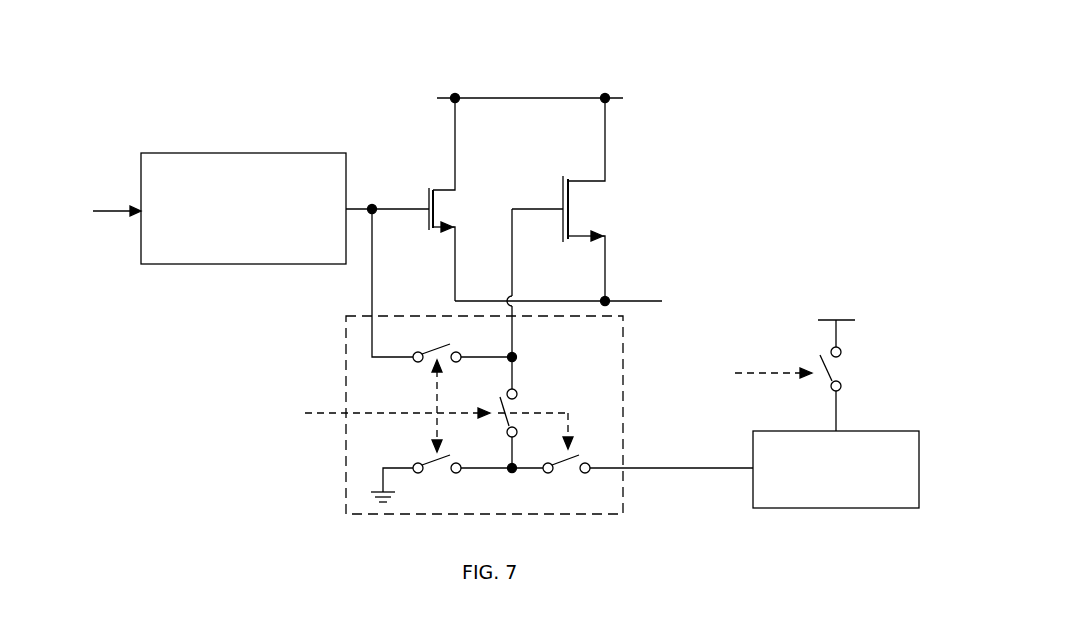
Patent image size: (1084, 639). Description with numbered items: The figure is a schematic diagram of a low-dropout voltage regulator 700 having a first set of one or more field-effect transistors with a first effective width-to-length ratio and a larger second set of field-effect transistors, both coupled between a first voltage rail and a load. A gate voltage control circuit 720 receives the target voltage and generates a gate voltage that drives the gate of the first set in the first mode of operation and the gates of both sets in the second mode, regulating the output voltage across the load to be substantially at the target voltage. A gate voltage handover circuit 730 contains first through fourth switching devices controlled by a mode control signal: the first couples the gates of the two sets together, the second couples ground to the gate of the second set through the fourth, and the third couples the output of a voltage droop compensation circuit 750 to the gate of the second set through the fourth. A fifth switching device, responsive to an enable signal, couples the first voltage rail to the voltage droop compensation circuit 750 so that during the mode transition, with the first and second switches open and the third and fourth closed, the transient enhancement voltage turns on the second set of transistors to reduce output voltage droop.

The low-dropout (LDO) voltage regulator 700 is at (714, 58).
The gate voltage control circuit 720 is at (260, 249).
The gate voltage handover circuit 730 is at (607, 343).
The voltage droop compensation circuit 750 is at (888, 431).